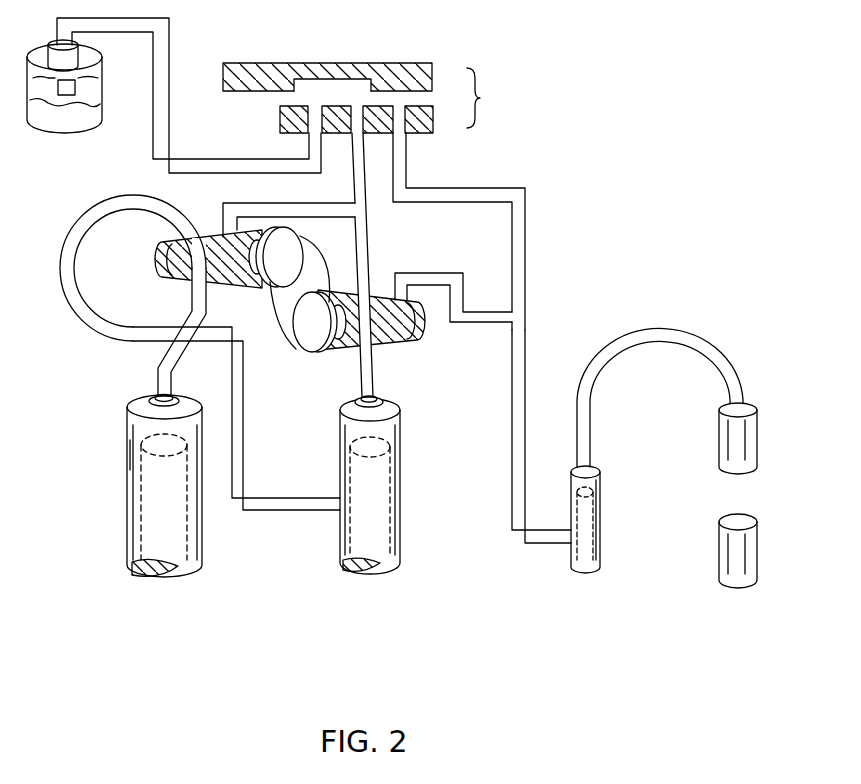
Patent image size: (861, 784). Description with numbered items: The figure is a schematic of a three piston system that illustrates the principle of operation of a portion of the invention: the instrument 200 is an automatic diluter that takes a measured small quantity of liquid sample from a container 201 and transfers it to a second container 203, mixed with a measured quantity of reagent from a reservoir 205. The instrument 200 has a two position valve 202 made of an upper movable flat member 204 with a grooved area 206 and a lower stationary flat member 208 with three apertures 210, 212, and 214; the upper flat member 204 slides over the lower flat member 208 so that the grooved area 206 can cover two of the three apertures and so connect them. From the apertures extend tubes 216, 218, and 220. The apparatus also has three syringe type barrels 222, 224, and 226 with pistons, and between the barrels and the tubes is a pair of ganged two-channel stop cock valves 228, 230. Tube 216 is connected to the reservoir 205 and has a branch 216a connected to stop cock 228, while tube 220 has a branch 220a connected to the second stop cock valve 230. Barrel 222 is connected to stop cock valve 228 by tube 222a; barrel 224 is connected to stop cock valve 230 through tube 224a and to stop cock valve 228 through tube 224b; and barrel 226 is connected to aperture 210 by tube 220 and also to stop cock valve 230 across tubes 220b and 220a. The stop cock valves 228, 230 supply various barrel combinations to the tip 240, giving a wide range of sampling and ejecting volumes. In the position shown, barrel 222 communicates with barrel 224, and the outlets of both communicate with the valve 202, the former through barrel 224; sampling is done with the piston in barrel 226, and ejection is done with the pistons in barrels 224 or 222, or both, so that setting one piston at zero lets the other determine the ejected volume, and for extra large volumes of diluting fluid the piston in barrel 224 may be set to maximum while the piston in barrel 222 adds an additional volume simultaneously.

The instrument 200 is at (452, 631).
The container 201 is at (740, 447).
The two position valve 202 is at (499, 98).
The container 203 is at (745, 555).
The upper movable flat member 204 is at (271, 62).
The reservoir 205 is at (65, 120).
The grooved area 206 is at (354, 91).
The lower stationary flat member 208 is at (434, 129).
The aperture 210 is at (409, 136).
The aperture 212 is at (358, 131).
The aperture 214 is at (306, 134).
The tube 216 is at (297, 176).
The branch 216a is at (222, 206).
The tube 218 is at (366, 210).
The tube 220 is at (526, 222).
The branch 220a is at (473, 325).
The tube 220b is at (520, 472).
The barrel 222 is at (128, 550).
The tube 222a is at (160, 362).
The barrel 224 is at (402, 523).
The tube 224a is at (376, 368).
The tube 224b is at (257, 503).
The barrel 226 is at (602, 547).
The stop cock valve 228 is at (283, 254).
The stop cock valve 230 is at (313, 334).
The tip 240 is at (746, 398).